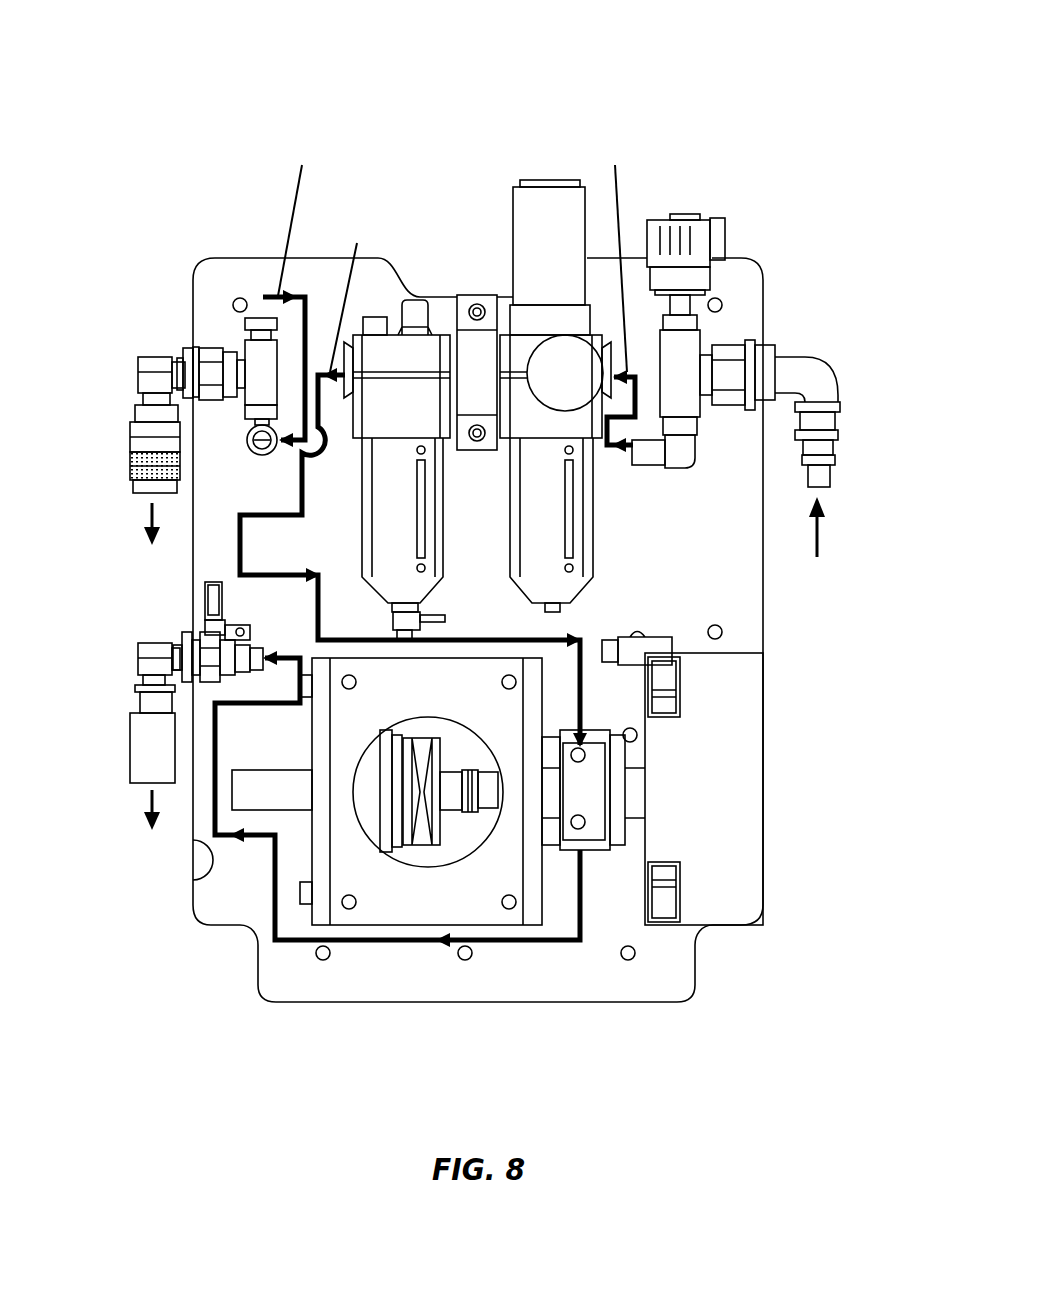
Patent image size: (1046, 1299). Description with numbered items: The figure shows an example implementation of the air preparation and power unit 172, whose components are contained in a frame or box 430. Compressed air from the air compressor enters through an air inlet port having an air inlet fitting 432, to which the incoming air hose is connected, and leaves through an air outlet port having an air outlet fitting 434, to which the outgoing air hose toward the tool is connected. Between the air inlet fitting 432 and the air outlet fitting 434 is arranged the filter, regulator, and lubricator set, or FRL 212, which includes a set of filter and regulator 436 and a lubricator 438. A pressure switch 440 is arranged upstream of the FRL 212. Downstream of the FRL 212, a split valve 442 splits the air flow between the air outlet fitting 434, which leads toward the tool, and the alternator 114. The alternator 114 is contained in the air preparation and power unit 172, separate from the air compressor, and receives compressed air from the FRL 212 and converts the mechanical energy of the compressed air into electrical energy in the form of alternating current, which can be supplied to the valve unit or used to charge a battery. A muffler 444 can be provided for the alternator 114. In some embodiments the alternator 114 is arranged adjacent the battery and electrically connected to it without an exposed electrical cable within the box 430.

The air preparation and power unit 172 is at (112, 72).
The frame or box 430 is at (208, 302).
The split valve 442 is at (232, 365).
The air outlet fitting 434 is at (145, 463).
The filter, regulator, and lubricator (FRL) 212 is at (552, 120).
The pressure switch 440 is at (730, 237).
The air inlet fitting 432 is at (818, 458).
The filter and regulator 436 is at (570, 521).
The lubricator 438 is at (366, 525).
The muffler 444 is at (130, 733).
The alternator 114 is at (264, 861).